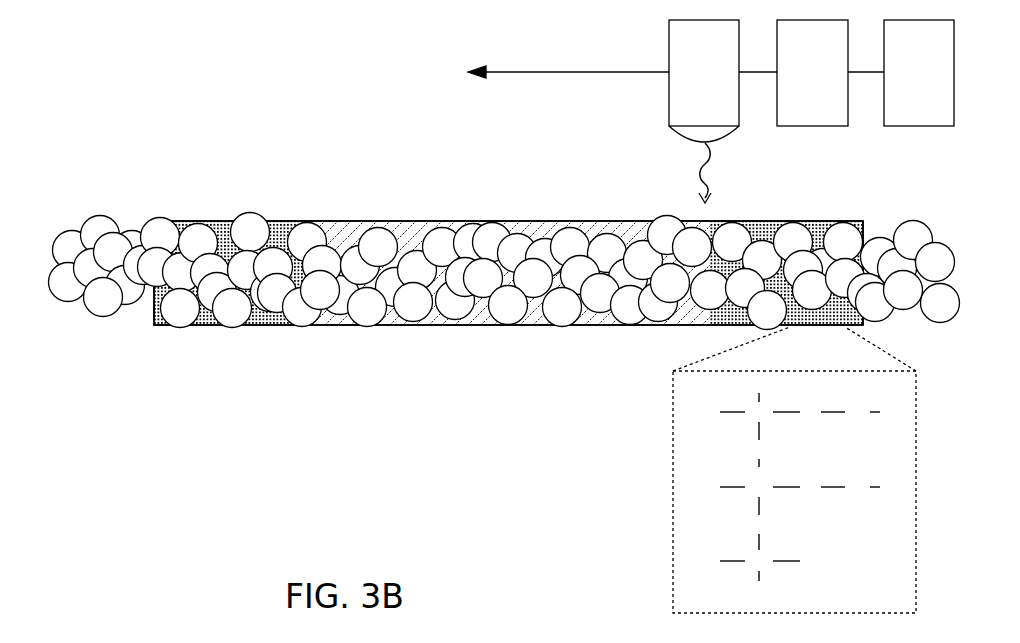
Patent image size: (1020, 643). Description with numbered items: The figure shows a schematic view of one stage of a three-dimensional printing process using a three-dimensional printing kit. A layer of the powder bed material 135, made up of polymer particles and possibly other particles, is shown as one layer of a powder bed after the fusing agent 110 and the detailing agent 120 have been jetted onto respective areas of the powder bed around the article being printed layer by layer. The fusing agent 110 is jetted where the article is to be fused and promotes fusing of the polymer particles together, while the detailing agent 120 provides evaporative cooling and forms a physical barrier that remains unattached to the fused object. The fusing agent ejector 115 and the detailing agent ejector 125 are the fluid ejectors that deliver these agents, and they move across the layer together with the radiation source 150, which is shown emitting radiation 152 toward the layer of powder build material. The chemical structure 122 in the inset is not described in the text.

The fusing agent 110 is at (402, 220).
The detailing agent 120 is at (281, 221).
The siloxane network of coating 122 is at (673, 455).
The layer of the powder bed material 135 is at (100, 232).
The radiation source 150 is at (724, 84).
The radiation 152 is at (696, 189).
The detailing agent ejector 125 is at (832, 84).
The fusing agent ejector 115 is at (939, 84).